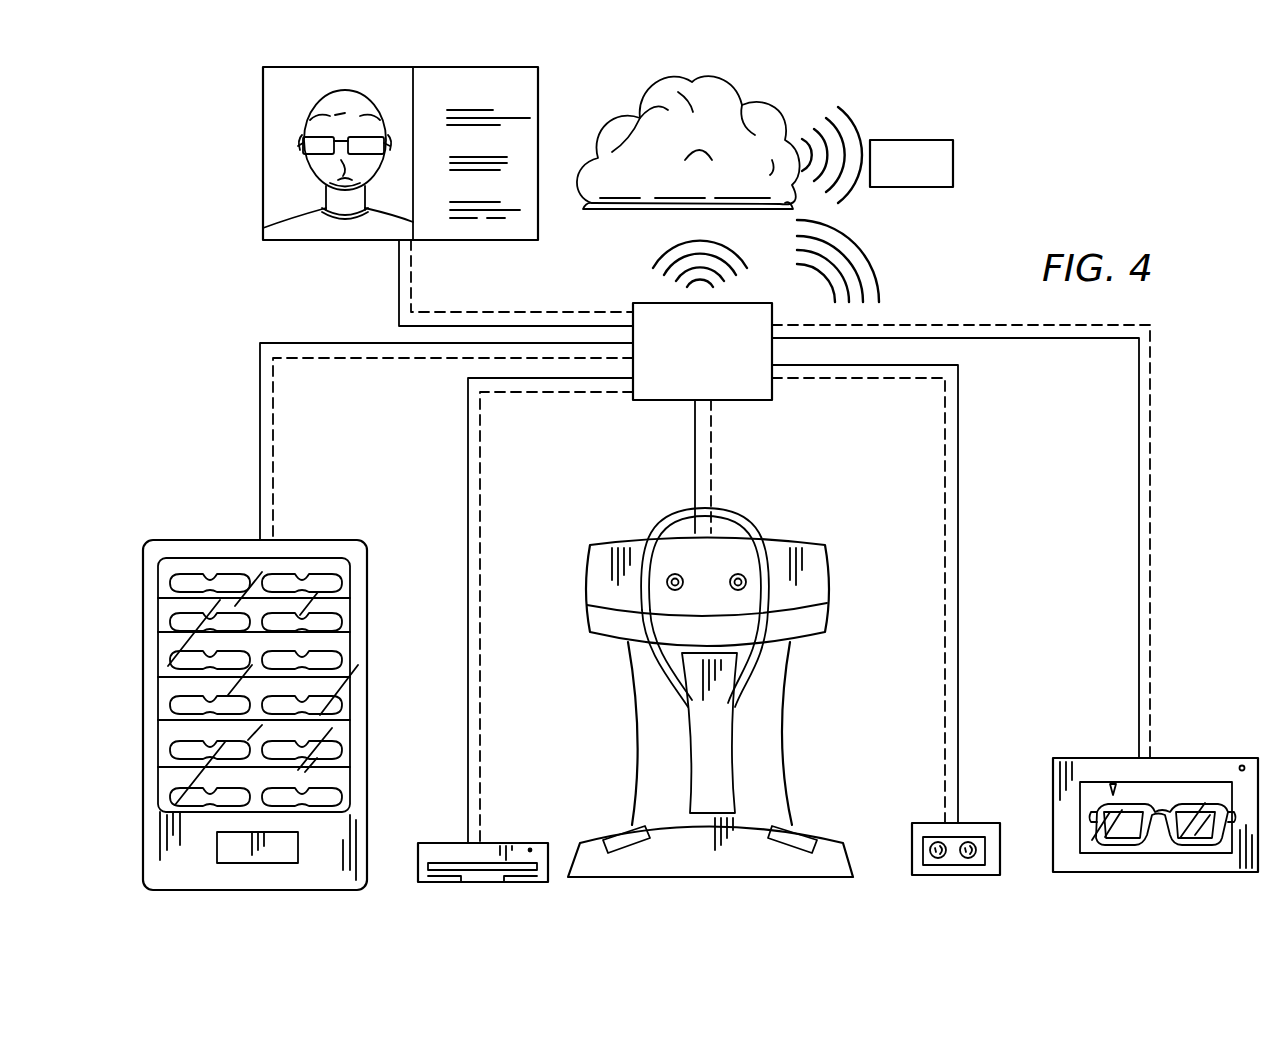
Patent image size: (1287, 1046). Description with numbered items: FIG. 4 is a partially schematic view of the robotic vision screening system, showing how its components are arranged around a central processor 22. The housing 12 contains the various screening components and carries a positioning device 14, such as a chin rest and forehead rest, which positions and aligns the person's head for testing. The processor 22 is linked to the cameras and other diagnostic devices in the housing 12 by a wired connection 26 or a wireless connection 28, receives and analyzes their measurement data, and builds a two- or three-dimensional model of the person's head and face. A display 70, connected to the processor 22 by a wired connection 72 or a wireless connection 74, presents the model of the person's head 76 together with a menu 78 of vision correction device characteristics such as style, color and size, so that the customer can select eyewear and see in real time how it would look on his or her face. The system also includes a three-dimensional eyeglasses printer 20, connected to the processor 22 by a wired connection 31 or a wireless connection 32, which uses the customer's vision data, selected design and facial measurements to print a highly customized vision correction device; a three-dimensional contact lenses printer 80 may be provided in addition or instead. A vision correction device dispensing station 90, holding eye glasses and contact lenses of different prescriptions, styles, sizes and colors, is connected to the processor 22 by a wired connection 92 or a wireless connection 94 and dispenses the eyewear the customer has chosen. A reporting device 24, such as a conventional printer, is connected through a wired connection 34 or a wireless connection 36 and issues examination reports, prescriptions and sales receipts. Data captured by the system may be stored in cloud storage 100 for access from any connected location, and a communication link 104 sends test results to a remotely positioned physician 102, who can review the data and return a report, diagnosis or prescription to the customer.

The housing 12 is at (762, 775).
The positioning device 14 is at (705, 735).
The 3D printer 20 is at (1165, 758).
The processor 22 is at (633, 303).
The reporting device 24 is at (443, 843).
The wired connection 26 is at (695, 462).
The wireless connection 28 is at (711, 493).
The wired connection 31 is at (1150, 640).
The wireless connection 32 is at (1139, 620).
The wired connection 34 is at (468, 738).
The wireless connection 36 is at (480, 780).
The display 70 is at (283, 68).
The wired connection 72 is at (399, 300).
The wireless connection 74 is at (413, 300).
The model of the person's head 76 is at (320, 148).
The menu 78 is at (520, 134).
The 3D contact lenses printer 80 is at (938, 842).
The vision correction device dispensing station 90 is at (310, 722).
The wired connection 92 is at (260, 430).
The wireless connection 94 is at (273, 482).
The cloud storage 100 is at (727, 137).
The remotely positioned physician 102 is at (915, 140).
The communication link 104 is at (866, 270).